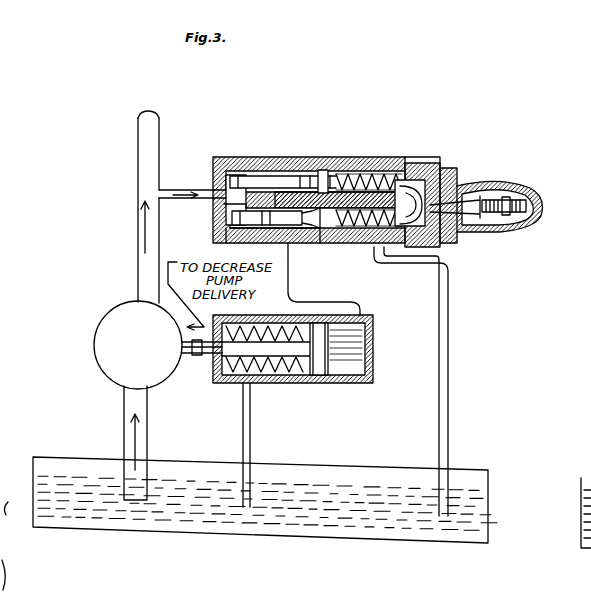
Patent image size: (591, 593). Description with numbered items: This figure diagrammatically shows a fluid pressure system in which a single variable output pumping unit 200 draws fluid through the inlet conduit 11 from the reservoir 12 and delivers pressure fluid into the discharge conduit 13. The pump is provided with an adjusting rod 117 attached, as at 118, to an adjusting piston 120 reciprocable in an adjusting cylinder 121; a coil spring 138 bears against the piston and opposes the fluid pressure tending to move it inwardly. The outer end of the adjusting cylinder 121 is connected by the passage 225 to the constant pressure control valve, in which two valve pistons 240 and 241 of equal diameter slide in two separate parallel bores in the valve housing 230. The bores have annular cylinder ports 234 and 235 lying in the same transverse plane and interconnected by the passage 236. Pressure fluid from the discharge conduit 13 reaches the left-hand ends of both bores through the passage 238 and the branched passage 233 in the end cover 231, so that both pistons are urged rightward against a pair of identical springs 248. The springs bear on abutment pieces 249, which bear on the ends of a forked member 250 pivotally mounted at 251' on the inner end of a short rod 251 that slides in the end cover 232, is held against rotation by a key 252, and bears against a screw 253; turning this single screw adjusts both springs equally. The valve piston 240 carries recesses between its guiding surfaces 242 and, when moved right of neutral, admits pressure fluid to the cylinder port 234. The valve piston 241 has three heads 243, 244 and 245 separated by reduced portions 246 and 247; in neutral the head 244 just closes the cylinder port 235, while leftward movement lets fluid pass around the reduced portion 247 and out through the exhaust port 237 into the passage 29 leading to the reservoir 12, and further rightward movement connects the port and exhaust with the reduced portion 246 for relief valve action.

The inlet conduit 11 is at (146, 442).
The reservoir 12 is at (468, 541).
The discharge conduit 13 is at (137, 291).
The exhaust passage 29 is at (438, 441).
The adjusting rod 117 is at (190, 358).
The attachment 118 is at (200, 358).
The adjusting piston 120 is at (372, 360).
The adjusting cylinder 121 is at (366, 386).
The coil spring 138 is at (290, 384).
The variable output pumping unit 200 is at (94, 335).
The passage 225 is at (268, 318).
The valve housing 230 is at (457, 170).
The end cover 231 is at (222, 158).
The end cover 232 is at (440, 162).
The branched passage 233 is at (216, 178).
The annular cylinder port 234 is at (310, 206).
The annular cylinder port 235 is at (267, 236).
The passage 236 is at (320, 170).
The exhaust port 237 is at (310, 246).
The passage 238 is at (189, 186).
The valve piston 240 is at (252, 158).
The valve piston 241 is at (236, 232).
The guiding surfaces 242 is at (266, 196).
The head 243 is at (240, 216).
The head 244 is at (230, 246).
The head 245 is at (322, 232).
The reduced portion 246 is at (276, 180).
The reduced portion 247 is at (334, 176).
The springs 248 is at (350, 176).
The abutment pieces 249 is at (412, 166).
The forked member 250 is at (430, 242).
The rod 251 is at (500, 220).
The pivot 251' is at (485, 191).
The key 252 is at (522, 196).
The screw 253 is at (540, 212).